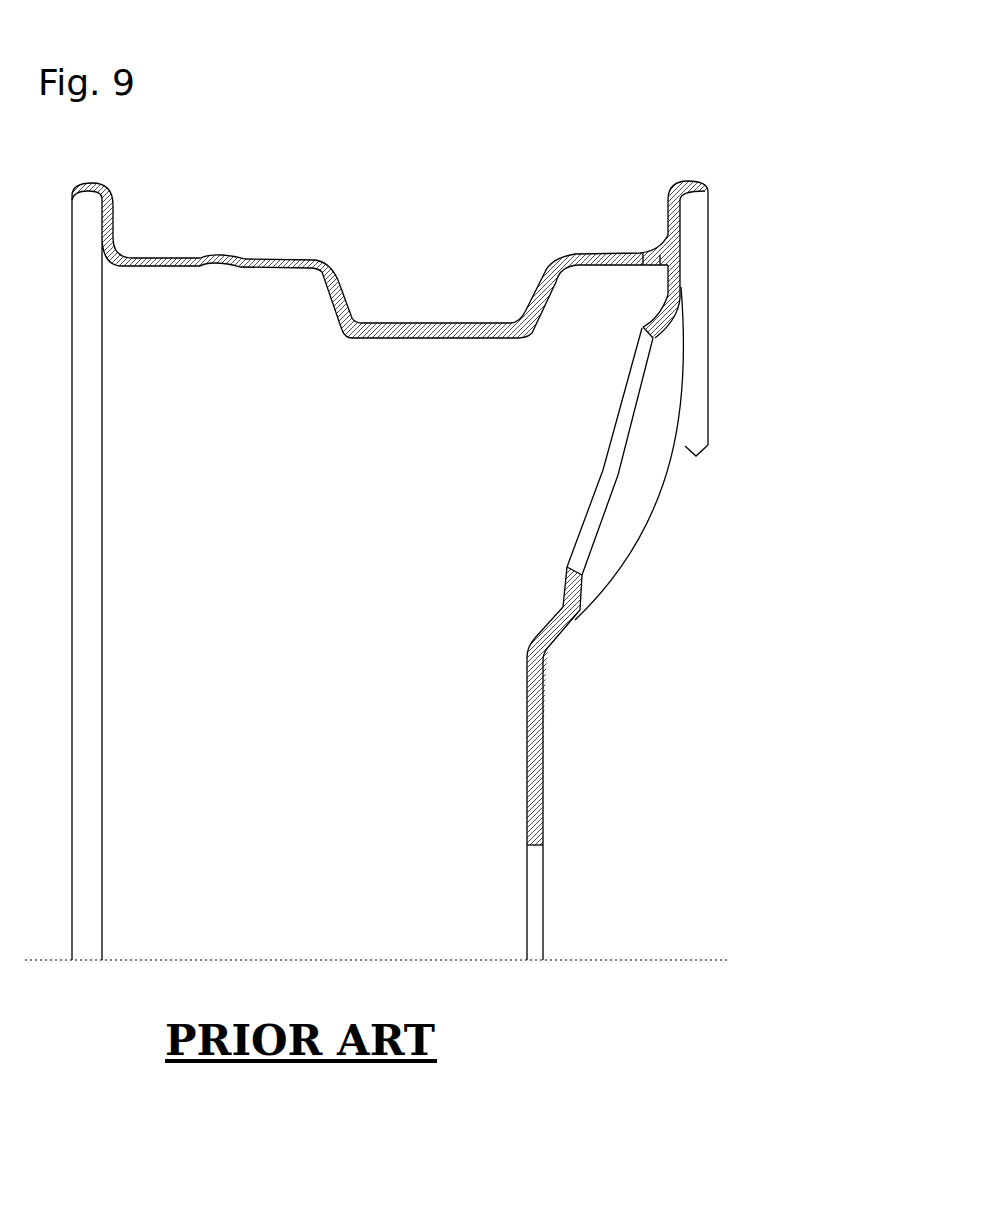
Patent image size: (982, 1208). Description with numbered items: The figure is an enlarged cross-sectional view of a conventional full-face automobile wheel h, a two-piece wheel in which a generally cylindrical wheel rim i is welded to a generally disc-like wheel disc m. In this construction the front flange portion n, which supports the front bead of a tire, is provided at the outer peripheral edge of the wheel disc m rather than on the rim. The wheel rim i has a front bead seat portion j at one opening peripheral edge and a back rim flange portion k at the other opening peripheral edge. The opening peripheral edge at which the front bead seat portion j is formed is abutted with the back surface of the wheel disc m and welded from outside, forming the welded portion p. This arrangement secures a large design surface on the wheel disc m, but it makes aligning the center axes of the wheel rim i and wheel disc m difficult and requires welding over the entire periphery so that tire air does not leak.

The back rim flange portion k is at (112, 198).
The wheel rim i is at (290, 258).
The front bead seat portion j is at (613, 253).
The welded portion p is at (663, 238).
The front flange portion n is at (688, 180).
The full-face automobile wheel h is at (775, 293).
The wheel disc m is at (545, 700).